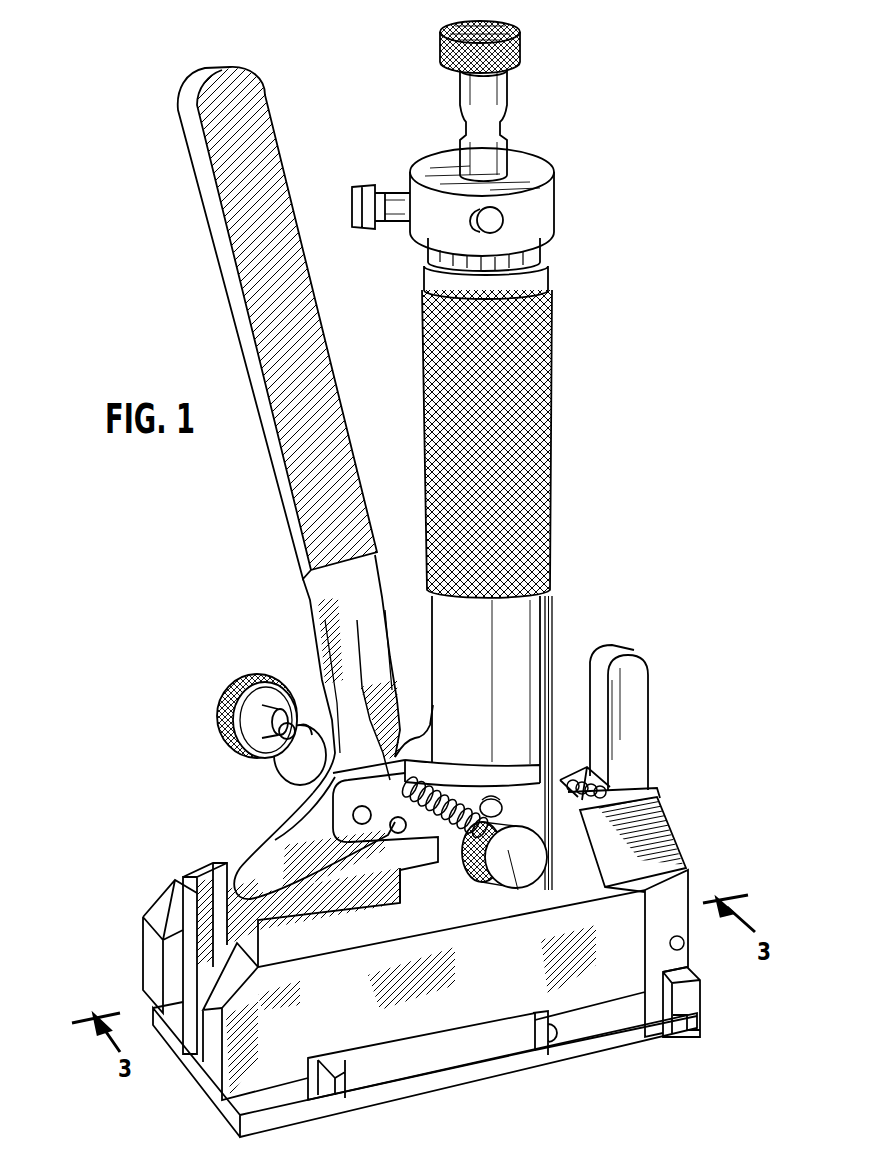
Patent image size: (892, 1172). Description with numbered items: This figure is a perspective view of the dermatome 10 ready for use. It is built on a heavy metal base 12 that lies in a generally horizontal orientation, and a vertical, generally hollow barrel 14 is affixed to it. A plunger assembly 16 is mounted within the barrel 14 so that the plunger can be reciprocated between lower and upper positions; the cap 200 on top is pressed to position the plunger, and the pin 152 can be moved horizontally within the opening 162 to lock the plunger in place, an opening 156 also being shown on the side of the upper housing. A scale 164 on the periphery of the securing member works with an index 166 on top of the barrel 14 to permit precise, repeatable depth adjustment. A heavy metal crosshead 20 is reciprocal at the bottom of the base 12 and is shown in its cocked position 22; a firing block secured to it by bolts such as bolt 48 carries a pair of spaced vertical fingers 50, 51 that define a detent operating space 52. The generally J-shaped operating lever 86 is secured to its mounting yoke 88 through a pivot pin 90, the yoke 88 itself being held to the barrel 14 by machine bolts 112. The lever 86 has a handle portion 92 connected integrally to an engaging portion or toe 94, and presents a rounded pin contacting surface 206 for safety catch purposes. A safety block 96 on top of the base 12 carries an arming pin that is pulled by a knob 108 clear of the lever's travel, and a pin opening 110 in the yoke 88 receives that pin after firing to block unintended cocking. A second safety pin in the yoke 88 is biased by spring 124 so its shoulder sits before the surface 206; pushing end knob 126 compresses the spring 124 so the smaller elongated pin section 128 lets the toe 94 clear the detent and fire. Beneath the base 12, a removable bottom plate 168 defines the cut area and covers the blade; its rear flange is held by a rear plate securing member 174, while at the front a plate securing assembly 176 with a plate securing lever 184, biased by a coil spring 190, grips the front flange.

The dermatome 10 is at (560, 602).
The base 12 is at (610, 973).
The barrel 14 is at (548, 448).
The plunger assembly 16 is at (540, 151).
The crosshead 20 is at (439, 1063).
The cocked position 22 is at (558, 1063).
The bolt 48 is at (195, 988).
The vertical finger 50 is at (190, 873).
The vertical finger 51 is at (198, 868).
The detent operating space 52 is at (185, 893).
The operating lever 86 is at (290, 505).
The mounting yoke 88 is at (356, 665).
The pivot pin 90 is at (352, 816).
The handle portion 92 is at (308, 328).
The engaging portion 94 is at (260, 890).
The safety block 96 is at (307, 725).
The knob 108 is at (218, 700).
The pin opening 110 is at (398, 834).
The machine bolt 112 is at (503, 797).
The spring 124 is at (440, 790).
The end knob 126 is at (516, 868).
The elongated pin section 128 is at (480, 904).
The pin 152 is at (398, 210).
The side opening 156 is at (500, 222).
The opening 162 is at (360, 190).
The scale 164 is at (512, 264).
The index 166 is at (522, 280).
The bottom plate 168 is at (567, 1063).
The rear plate securing member 174 is at (287, 1114).
The plate securing assembly 176 is at (680, 928).
The plate securing lever 184 is at (640, 677).
The coil spring 190 is at (593, 780).
The cap 200 is at (522, 42).
The pin contacting surface 206 is at (403, 700).